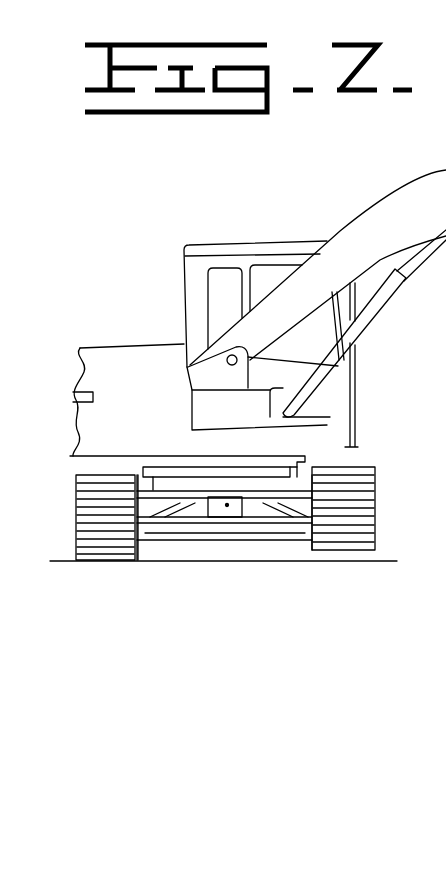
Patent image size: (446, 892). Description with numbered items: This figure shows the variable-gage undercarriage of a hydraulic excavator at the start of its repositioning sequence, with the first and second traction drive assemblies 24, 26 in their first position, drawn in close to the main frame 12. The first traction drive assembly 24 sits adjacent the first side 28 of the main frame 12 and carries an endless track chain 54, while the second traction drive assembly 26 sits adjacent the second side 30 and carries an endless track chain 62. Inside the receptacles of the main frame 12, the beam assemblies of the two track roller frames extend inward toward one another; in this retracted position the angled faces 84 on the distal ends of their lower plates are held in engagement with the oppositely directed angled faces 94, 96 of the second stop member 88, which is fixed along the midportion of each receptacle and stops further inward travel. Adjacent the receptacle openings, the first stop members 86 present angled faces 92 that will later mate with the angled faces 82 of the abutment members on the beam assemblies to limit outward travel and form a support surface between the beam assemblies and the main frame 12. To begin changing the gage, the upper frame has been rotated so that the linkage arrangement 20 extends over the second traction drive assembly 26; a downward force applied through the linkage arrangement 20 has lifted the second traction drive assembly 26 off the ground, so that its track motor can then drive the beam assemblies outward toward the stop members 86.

The main frame 12 is at (172, 495).
The linkage arrangement 20 is at (422, 169).
The first traction drive assembly 24 is at (94, 573).
The second traction drive assembly 26 is at (352, 563).
The first side 28 is at (140, 490).
The second side 30 is at (327, 493).
The endless track chain 54 is at (76, 500).
The endless track chain 62 is at (353, 462).
The angled face 82 is at (168, 545).
The angled face 84 is at (175, 520).
The first stop member 86 is at (152, 540).
The second stop member 88 is at (220, 545).
The angled face 92 is at (160, 500).
The angled face 94 is at (205, 495).
The angled face 96 is at (240, 495).